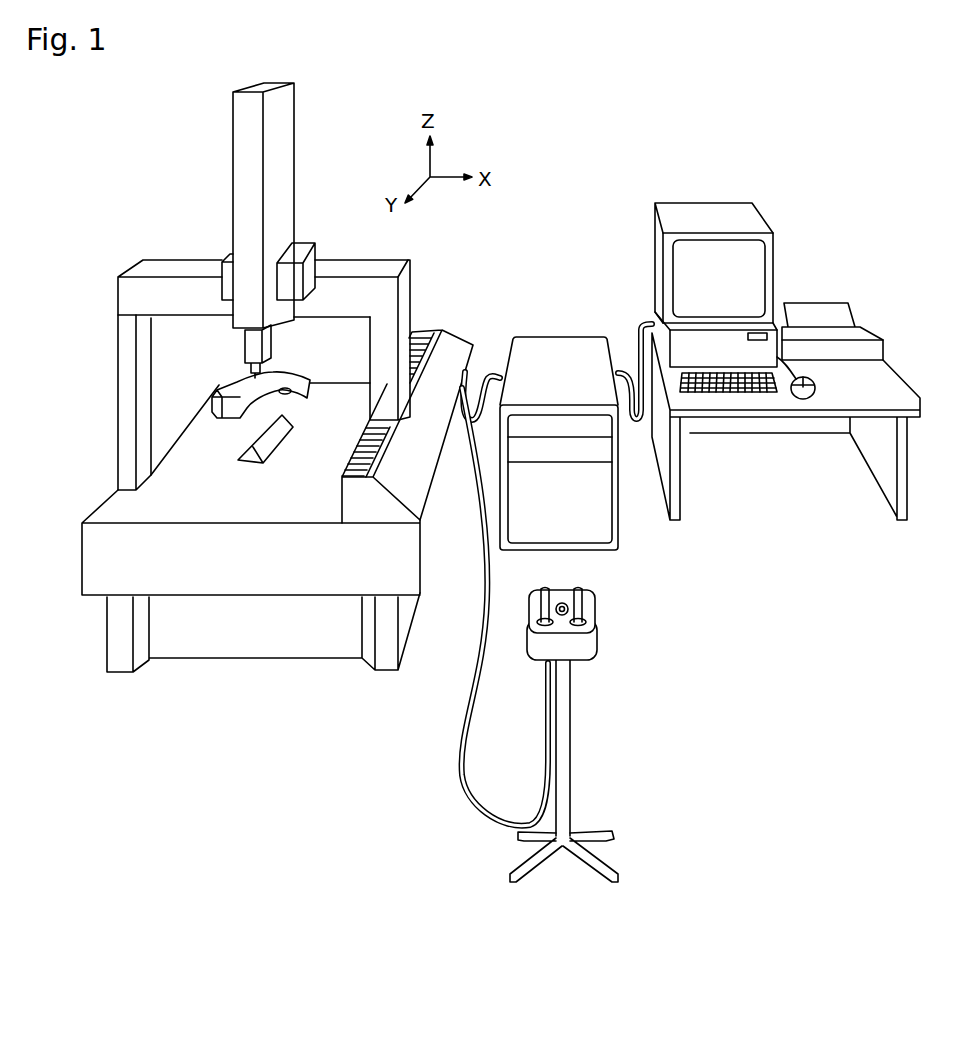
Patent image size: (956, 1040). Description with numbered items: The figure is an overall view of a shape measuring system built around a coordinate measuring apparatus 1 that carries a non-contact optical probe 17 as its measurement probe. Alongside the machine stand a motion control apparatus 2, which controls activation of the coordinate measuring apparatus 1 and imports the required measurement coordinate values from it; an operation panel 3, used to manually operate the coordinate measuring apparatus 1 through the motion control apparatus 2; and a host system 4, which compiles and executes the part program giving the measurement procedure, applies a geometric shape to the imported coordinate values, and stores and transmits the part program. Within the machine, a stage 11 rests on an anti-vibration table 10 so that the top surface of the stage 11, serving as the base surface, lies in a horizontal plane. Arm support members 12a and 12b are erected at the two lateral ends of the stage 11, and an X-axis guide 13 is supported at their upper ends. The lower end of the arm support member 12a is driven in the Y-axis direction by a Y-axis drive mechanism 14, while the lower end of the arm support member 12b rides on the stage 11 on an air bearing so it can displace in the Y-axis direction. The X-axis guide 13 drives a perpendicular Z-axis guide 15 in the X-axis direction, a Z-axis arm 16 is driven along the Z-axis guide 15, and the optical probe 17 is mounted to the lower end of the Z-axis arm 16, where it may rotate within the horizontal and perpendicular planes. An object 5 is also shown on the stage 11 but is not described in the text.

The coordinate measuring apparatus 1 is at (331, 115).
The motion control apparatus 2 is at (558, 344).
The operation panel 3 is at (630, 637).
The host system 4 is at (803, 224).
The workpiece 5 is at (275, 446).
The anti-vibration table 10 is at (117, 640).
The stage 11 is at (92, 558).
The arm support member 12a is at (404, 299).
The arm support member 12b is at (122, 398).
The X-axis guide 13 is at (172, 268).
The Y-axis drive mechanism 14 is at (452, 348).
The Z-axis guide 15 is at (243, 162).
The Z-axis arm 16 is at (268, 337).
The optical probe 17 is at (217, 392).